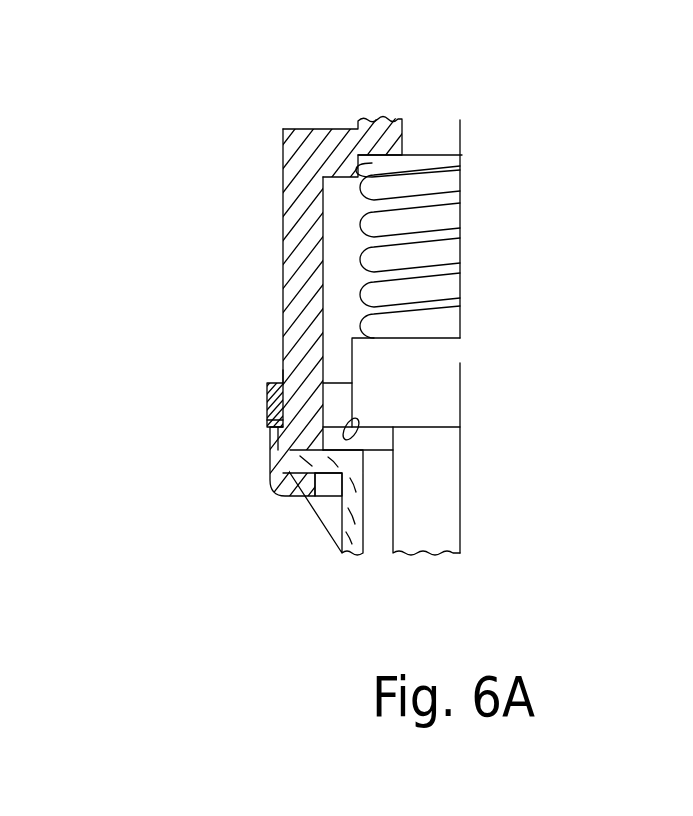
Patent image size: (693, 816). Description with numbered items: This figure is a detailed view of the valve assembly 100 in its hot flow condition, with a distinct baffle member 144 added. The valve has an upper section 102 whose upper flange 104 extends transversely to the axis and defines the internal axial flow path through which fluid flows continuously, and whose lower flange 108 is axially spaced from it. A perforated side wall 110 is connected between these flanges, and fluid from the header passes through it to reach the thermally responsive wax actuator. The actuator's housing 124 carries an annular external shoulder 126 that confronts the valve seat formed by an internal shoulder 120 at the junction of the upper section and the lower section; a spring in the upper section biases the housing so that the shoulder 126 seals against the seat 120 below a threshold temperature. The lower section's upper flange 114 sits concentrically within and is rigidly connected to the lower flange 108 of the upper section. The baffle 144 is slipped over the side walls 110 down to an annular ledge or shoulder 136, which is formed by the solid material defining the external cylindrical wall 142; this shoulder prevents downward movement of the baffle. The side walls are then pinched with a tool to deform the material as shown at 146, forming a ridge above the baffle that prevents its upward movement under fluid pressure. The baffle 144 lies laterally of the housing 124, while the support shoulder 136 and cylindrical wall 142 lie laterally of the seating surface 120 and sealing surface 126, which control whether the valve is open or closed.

The valve assembly 100 is at (440, 92).
The upper flange 104 is at (313, 129).
The upper section 102 is at (280, 241).
The perforated side wall 110 is at (282, 293).
The deformed material 146 is at (283, 378).
The baffle member 144 is at (270, 394).
The shoulder 136 is at (258, 418).
The external cylindrical wall 142 is at (270, 435).
The upper flange of lower section 114 is at (274, 469).
The lower flange 108 is at (292, 495).
The housing 124 is at (433, 363).
The annular external shoulder 126 is at (353, 416).
The internal shoulder 120 is at (362, 448).